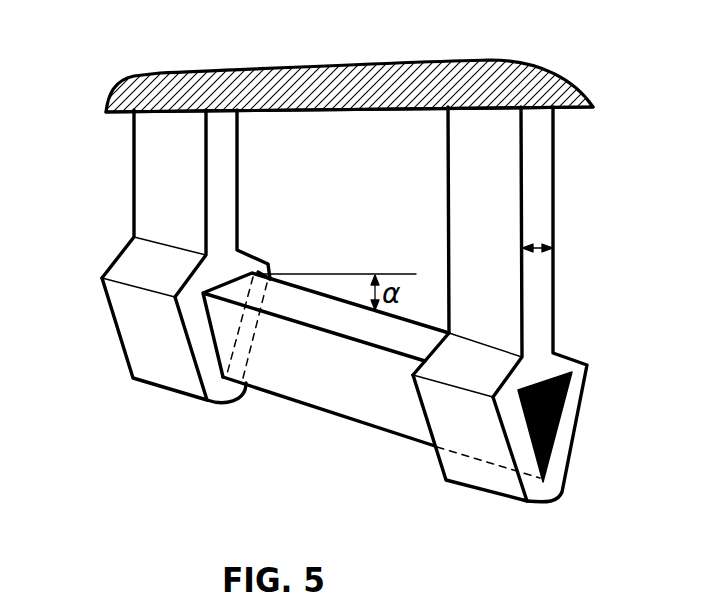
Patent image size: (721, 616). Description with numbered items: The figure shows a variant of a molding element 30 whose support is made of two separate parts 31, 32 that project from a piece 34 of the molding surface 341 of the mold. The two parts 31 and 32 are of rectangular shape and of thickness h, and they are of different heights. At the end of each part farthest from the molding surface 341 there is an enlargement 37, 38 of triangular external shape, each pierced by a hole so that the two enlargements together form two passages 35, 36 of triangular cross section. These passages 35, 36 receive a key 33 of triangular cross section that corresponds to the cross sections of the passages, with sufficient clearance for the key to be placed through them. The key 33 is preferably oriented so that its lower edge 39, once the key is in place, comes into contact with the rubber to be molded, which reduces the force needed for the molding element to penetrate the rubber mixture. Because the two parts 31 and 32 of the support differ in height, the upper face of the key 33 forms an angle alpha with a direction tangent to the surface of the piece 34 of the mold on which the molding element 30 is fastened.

The molding element 30 is at (575, 232).
The first part of the support 31 is at (500, 324).
The second part of the support 32 is at (165, 208).
The key 33 is at (355, 383).
The piece of the molding surface 34 is at (370, 74).
The molding surface 341 is at (118, 115).
The passage 35 is at (562, 405).
The passage 36 is at (258, 272).
The enlargement 37 is at (150, 330).
The enlargement 38 is at (480, 478).
The lower edge of the key 39 is at (300, 403).